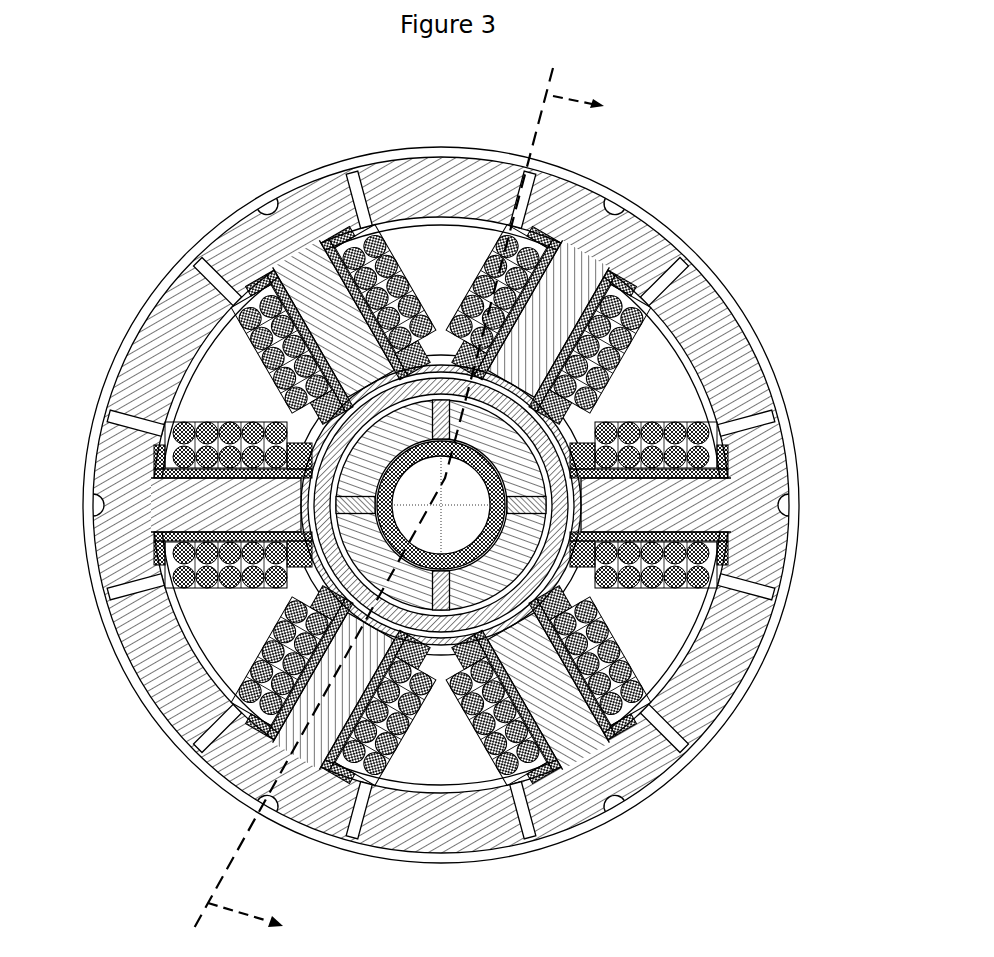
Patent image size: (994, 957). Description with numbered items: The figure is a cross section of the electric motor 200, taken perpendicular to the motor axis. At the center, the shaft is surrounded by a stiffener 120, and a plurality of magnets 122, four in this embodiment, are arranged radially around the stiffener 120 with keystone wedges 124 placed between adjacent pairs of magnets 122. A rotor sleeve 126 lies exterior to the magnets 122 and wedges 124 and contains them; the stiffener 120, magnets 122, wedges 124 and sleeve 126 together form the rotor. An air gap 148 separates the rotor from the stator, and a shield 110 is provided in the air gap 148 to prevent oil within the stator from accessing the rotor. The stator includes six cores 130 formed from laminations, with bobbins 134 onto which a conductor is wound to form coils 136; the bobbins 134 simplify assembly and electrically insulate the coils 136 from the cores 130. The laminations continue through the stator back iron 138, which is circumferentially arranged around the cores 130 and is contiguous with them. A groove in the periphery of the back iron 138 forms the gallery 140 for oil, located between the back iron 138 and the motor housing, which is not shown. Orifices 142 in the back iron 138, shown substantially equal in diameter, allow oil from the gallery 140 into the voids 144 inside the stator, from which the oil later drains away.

The shield 110 is at (522, 530).
The stiffener 120 is at (483, 460).
The magnets 122 is at (467, 430).
The keystone wedges 124 is at (438, 428).
The rotor sleeve 126 is at (497, 617).
The cores 130 is at (640, 515).
The bobbins 134 is at (613, 710).
The coils 136 is at (620, 727).
The stator back iron 138 is at (487, 820).
The gallery 140 is at (479, 157).
The orifices 142 is at (670, 275).
The voids 144 is at (640, 412).
The air gap 148 is at (441, 640).
The electric motor 200 is at (215, 184).